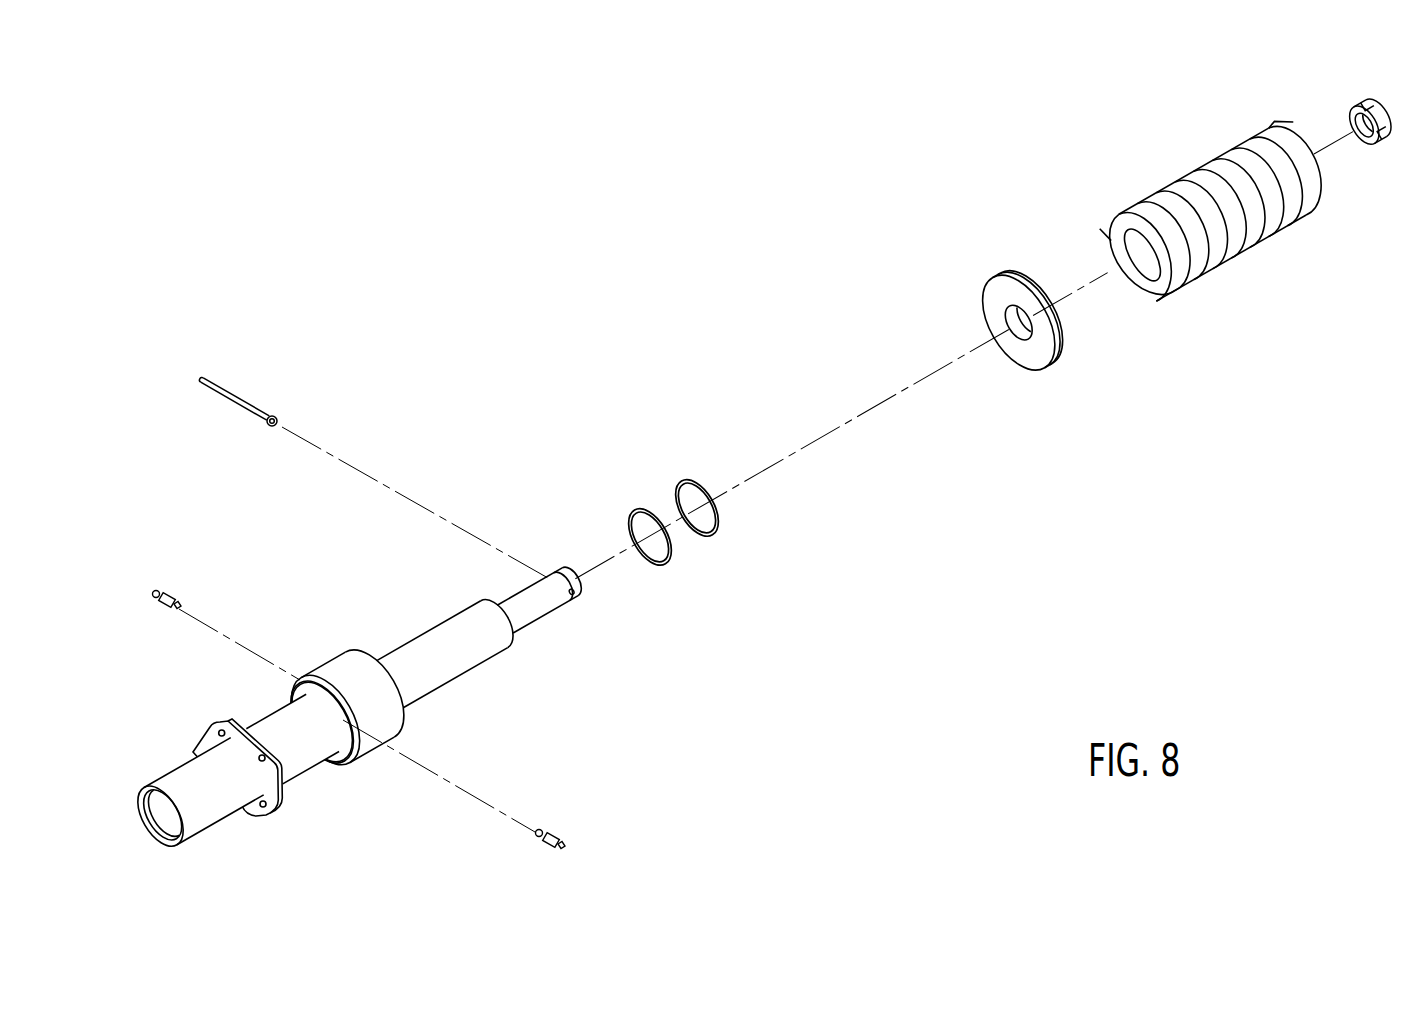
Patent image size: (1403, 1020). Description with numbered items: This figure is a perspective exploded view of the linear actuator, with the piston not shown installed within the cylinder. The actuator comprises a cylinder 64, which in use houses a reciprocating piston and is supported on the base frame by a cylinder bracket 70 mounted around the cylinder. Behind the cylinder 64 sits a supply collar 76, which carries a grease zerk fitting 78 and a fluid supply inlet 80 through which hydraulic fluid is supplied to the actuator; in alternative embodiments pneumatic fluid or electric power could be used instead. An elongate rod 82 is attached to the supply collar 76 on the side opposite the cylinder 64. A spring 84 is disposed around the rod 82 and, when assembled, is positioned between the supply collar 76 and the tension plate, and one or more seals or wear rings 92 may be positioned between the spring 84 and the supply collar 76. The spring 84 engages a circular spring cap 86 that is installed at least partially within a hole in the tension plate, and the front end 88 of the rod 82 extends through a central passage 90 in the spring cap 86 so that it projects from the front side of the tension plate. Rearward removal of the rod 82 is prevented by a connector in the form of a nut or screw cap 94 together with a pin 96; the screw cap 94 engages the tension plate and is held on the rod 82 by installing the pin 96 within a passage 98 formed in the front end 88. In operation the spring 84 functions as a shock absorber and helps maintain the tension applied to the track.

The cylinder 64 is at (224, 773).
The cylinder bracket 70 is at (275, 786).
The supply collar 76 is at (341, 692).
The grease zerk fitting 78 is at (191, 578).
The fluid supply inlet 80 is at (582, 824).
The elongate rod 82 is at (440, 644).
The spring 84 is at (1216, 211).
The circular spring cap 86 is at (991, 320).
The front end 88 is at (509, 591).
The central passage 90 is at (970, 333).
The seals or wear rings 92 is at (709, 542).
The screw cap 94 is at (1335, 109).
The pin 96 is at (249, 382).
The passage 98 is at (610, 629).